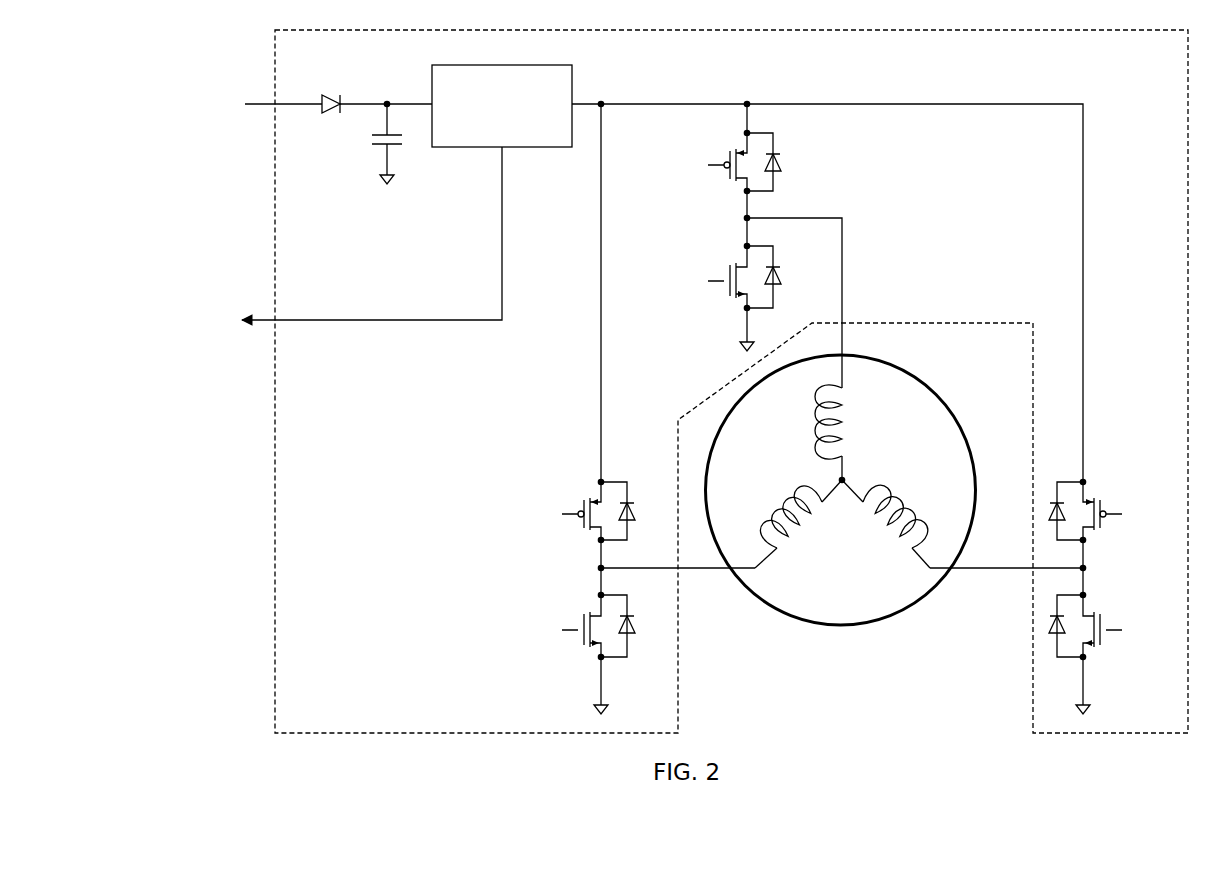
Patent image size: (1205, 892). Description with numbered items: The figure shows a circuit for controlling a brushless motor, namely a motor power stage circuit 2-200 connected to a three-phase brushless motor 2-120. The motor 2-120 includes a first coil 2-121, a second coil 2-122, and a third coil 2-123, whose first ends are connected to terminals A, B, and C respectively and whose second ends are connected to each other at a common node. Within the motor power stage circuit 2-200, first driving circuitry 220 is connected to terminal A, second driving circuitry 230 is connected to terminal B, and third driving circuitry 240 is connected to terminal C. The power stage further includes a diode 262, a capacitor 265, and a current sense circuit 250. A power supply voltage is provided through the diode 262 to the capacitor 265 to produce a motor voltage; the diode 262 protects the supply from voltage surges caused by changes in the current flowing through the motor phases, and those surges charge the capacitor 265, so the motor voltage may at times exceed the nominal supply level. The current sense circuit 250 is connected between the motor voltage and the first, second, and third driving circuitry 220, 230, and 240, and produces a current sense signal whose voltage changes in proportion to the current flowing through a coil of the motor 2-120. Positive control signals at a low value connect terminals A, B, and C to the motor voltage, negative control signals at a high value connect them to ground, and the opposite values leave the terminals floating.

The motor power stage circuit 2-200 is at (275, 45).
The diode 262 is at (322, 106).
The capacitor 265 is at (372, 141).
The current sense circuit 250 is at (502, 106).
The first driving circuitry 220 is at (815, 189).
The second driving circuitry 230 is at (576, 459).
The third driving circuitry 240 is at (1118, 464).
The three-phase brushless motor 2-120 is at (916, 374).
The first coil 2-121 is at (841, 438).
The second coil 2-122 is at (773, 510).
The third coil 2-123 is at (910, 512).